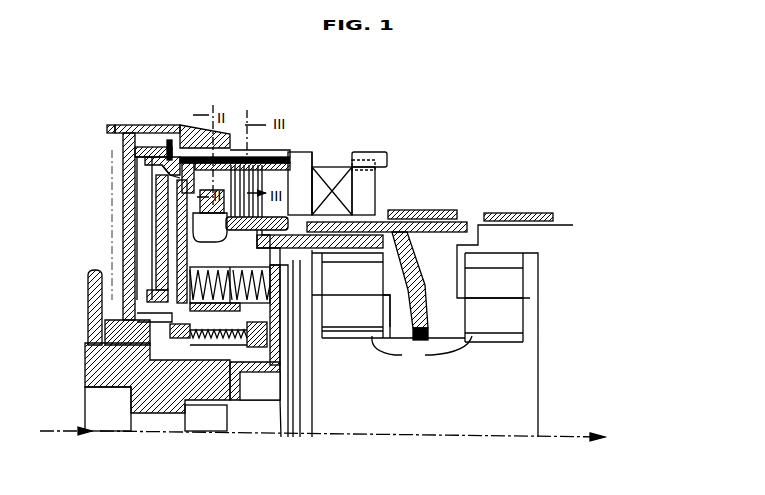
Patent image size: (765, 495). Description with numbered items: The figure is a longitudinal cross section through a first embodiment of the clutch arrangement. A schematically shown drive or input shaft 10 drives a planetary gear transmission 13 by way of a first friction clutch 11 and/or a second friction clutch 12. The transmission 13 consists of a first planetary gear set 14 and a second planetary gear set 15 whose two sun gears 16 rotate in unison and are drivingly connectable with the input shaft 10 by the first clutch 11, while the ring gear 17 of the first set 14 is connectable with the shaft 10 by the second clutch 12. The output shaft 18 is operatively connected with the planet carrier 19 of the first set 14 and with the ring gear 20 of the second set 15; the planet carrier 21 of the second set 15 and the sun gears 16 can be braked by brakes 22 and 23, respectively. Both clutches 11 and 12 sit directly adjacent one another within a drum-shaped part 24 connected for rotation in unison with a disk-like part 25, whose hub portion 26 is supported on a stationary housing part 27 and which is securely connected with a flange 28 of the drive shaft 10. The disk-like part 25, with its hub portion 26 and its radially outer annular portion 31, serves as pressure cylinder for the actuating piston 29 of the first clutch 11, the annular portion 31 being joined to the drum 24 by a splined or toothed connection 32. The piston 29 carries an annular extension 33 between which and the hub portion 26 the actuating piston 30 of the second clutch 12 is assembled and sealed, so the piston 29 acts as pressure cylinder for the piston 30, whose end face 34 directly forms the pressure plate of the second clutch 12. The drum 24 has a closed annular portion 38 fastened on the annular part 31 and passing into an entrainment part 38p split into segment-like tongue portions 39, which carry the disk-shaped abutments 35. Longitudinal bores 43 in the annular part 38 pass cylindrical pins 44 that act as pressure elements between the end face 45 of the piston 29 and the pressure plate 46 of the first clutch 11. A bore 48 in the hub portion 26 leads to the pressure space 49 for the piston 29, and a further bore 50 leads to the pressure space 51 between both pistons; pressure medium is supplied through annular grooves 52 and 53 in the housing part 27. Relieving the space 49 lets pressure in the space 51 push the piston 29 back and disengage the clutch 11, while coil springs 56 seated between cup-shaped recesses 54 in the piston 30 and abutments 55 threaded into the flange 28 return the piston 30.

The drive or input shaft 10 is at (118, 432).
The first friction clutch 11 is at (335, 183).
The second friction clutch 12 is at (268, 172).
The planetary gear transmission 13 is at (480, 210).
The first planetary gear set 14 is at (362, 352).
The second planetary gear set 15 is at (497, 352).
The sun gears 16 is at (422, 350).
The ring gear of the first planetary gear set 17 is at (366, 263).
The output shaft 18 is at (556, 430).
The planet carrier of the first planetary gear set 19 is at (386, 295).
The ring gear of the second planetary gear set 20 is at (500, 254).
The planet carrier of the second planetary gear set 21 is at (484, 300).
The brake 22 is at (530, 213).
The brake 23 is at (416, 211).
The drum-shaped part 24 is at (132, 104).
The disk-like part 25 is at (124, 195).
The hub portion 26 is at (135, 342).
The housing part 27 is at (96, 287).
The flange 28 is at (225, 375).
The actuating piston 29 is at (140, 222).
The actuating piston 30 is at (152, 238).
The annular portion 31 is at (163, 148).
The splined or toothed connection 32 is at (120, 128).
The annular extension 33 is at (166, 182).
The end face 34 is at (212, 210).
The abutments 35 is at (363, 205).
The annular portion 38 is at (186, 135).
The entrainment part 38p is at (235, 148).
The tongue portions 39 is at (386, 156).
The longitudinal bores 43 is at (244, 158).
The cylindrical pins 44 is at (272, 157).
The end face 45 is at (128, 160).
The pressure plate 46 is at (304, 182).
The bore 48 is at (142, 333).
The pressure space 49 is at (134, 172).
The bore 50 is at (108, 409).
The pressure space 51 is at (168, 277).
The annular groove 52 is at (150, 357).
The annular groove 53 is at (206, 418).
The cup-shaped recesses 54 is at (262, 233).
The abutments 55 is at (258, 300).
The coil springs 56 is at (245, 290).